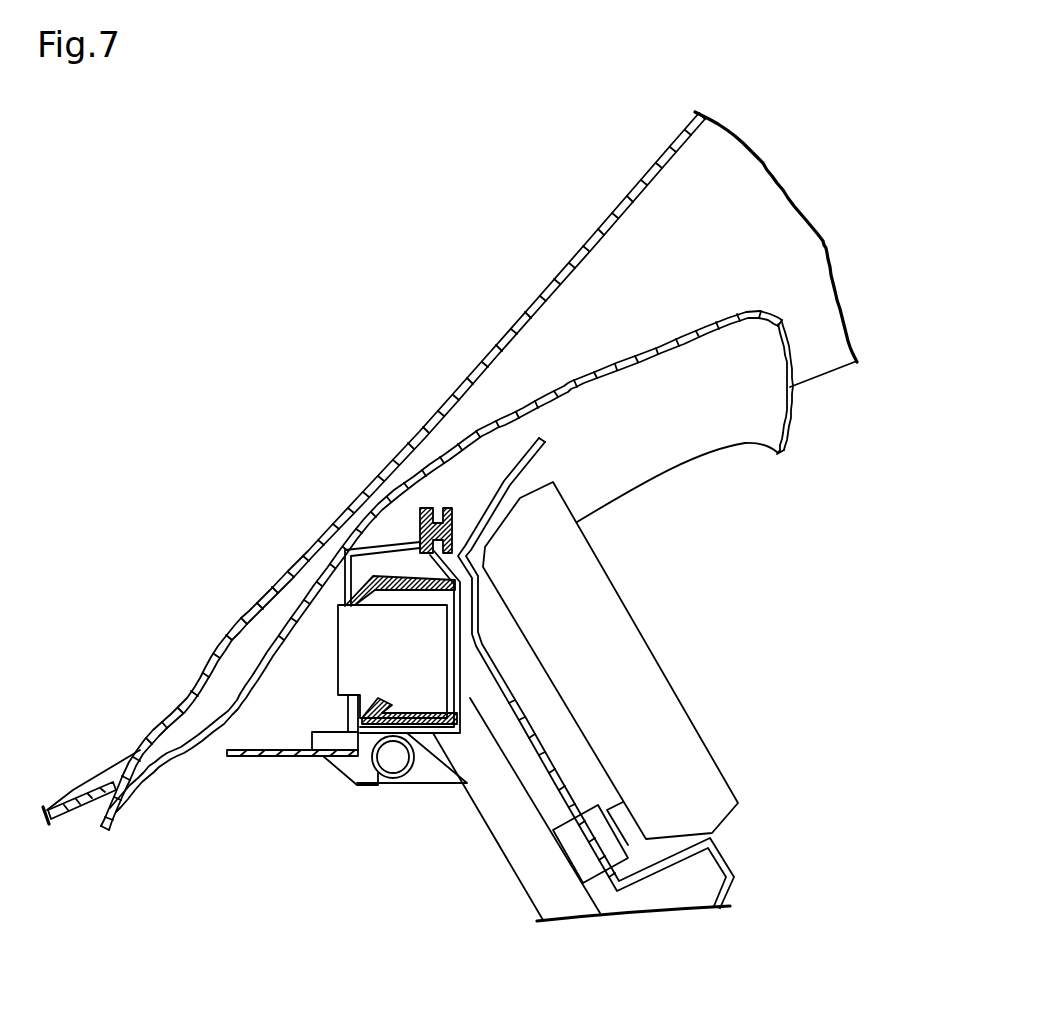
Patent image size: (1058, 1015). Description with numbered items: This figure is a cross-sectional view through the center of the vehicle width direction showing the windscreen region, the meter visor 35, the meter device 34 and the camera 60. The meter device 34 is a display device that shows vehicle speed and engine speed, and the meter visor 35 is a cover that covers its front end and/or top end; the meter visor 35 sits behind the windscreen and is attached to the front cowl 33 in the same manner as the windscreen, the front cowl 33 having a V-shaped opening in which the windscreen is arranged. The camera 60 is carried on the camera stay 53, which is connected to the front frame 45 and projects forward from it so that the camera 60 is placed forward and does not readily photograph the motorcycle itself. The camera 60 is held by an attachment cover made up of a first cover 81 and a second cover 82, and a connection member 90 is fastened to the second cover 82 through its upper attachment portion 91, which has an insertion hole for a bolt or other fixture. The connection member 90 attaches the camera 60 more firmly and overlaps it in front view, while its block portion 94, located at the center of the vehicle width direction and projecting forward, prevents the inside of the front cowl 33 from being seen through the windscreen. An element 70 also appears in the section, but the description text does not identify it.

The front cowl 33 is at (497, 360).
The meter device 34 is at (640, 652).
The meter visor 35 is at (588, 370).
The front frame 45 is at (410, 785).
The camera stay 53 is at (350, 770).
The camera 60 is at (343, 673).
The support plate 70 is at (432, 735).
The first cover 81 is at (397, 573).
The second cover 82 is at (470, 670).
The connection member 90 is at (299, 794).
The upper attachment portion 91 is at (418, 527).
The block portion 94 is at (258, 757).